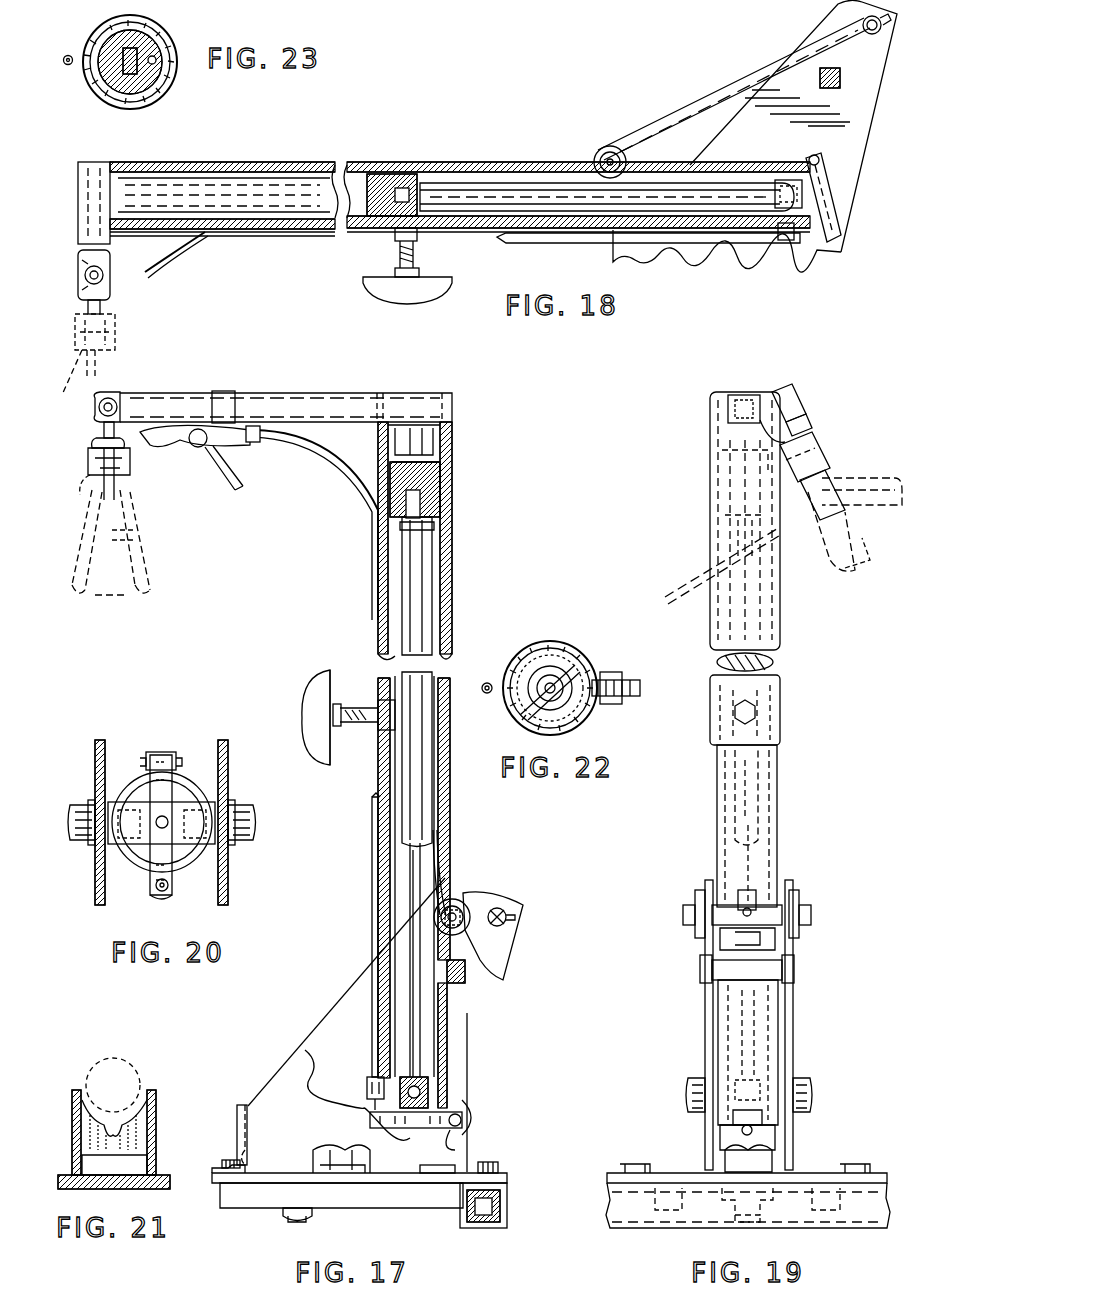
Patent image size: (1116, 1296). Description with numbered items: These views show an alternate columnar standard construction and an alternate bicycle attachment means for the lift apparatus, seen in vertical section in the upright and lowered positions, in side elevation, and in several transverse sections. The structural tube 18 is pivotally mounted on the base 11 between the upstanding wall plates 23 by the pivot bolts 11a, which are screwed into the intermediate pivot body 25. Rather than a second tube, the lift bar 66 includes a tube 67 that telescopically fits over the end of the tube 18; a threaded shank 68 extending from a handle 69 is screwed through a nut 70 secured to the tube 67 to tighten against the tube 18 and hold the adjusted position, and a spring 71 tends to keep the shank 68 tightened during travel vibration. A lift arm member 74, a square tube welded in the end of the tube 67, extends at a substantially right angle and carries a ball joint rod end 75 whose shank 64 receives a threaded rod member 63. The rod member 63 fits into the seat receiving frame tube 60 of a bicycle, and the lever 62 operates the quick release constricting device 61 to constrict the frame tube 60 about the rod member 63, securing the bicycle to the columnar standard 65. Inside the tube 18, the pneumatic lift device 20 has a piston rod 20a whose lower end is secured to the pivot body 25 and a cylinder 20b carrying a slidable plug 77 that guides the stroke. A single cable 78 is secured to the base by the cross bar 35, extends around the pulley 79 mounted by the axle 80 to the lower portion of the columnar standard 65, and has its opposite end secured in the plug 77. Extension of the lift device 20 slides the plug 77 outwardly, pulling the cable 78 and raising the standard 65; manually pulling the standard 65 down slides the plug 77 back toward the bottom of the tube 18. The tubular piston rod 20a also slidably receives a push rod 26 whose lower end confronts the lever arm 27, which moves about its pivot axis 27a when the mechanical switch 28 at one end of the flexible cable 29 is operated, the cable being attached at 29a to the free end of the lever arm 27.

In FIG. 19, the base 11 is at (650, 1160).
In FIG. 20, the pivot bolts 11a is at (82, 805).
In FIG. 19, the pivot bolts 11a is at (695, 1080).
In FIG. 23, the structural tube 18 is at (165, 88).
In FIG. 18, the structural tube 18 is at (532, 162).
In FIG. 17, the structural tube 18 is at (450, 782).
In FIG. 22, the structural tube 18 is at (553, 641).
In FIG. 20, the structural tube 18 is at (135, 862).
In FIG. 19, the structural tube 18 is at (778, 830).
In FIG. 17, the pneumatic lift device 20 is at (405, 893).
In FIG. 17, the piston rod 20a is at (415, 935).
In FIG. 22, the piston rod 20a is at (512, 713).
In FIG. 19, the piston rod 20a is at (755, 1030).
In FIG. 18, the cylinder 20b is at (490, 183).
In FIG. 17, the cylinder 20b is at (410, 586).
In FIG. 22, the cylinder 20b is at (578, 720).
In FIG. 18, the upstanding wall plates 23 is at (860, 95).
In FIG. 17, the upstanding wall plates 23 is at (470, 1015).
In FIG. 20, the upstanding wall plates 23 is at (223, 740).
In FIG. 21, the upstanding wall plates 23 is at (72, 1100).
In FIG. 19, the upstanding wall plates 23 is at (705, 1000).
In FIG. 17, the intermediate pivot body 25 is at (460, 1080).
In FIG. 17, the push rod 26 is at (467, 1172).
In FIG. 18, the lever arm 27 is at (832, 198).
In FIG. 17, the lever arm 27 is at (462, 1135).
In FIG. 20, the lever arm 27 is at (150, 790).
In FIG. 18, the pivot axis 27a is at (820, 158).
In FIG. 17, the pivot axis 27a is at (462, 1108).
In FIG. 20, the pivot axis 27a is at (178, 758).
In FIG. 17, the mechanical switch 28 is at (190, 447).
In FIG. 23, the flexible cable 29 is at (67, 55).
In FIG. 18, the flexible cable 29 is at (812, 245).
In FIG. 17, the flexible cable 29 is at (300, 445).
In FIG. 22, the flexible cable 29 is at (487, 683).
In FIG. 20, the flexible cable 29 is at (152, 888).
In FIG. 18, the cable attachment 29a is at (838, 232).
In FIG. 17, the cable attachment 29a is at (365, 1125).
In FIG. 20, the cable attachment 29a is at (163, 892).
In FIG. 18, the cross bar 35 is at (860, 22).
In FIG. 17, the cross bar 35 is at (490, 910).
In FIG. 19, the cross bar 35 is at (770, 950).
In FIG. 18, the seat receiving frame tube 60 is at (118, 330).
In FIG. 17, the seat receiving frame tube 60 is at (138, 540).
In FIG. 19, the seat receiving frame tube 60 is at (845, 548).
In FIG. 18, the quick release constricting device 61 is at (120, 338).
In FIG. 17, the quick release constricting device 61 is at (135, 476).
In FIG. 19, the quick release constricting device 61 is at (825, 460).
In FIG. 18, the lever 62 is at (66, 385).
In FIG. 17, the lever 62 is at (82, 498).
In FIG. 18, the rod member 63 is at (80, 312).
In FIG. 17, the rod member 63 is at (96, 446).
In FIG. 19, the rod member 63 is at (806, 432).
In FIG. 18, the attaching shank 64 is at (100, 310).
In FIG. 17, the attaching shank 64 is at (102, 436).
In FIG. 19, the attaching shank 64 is at (805, 422).
In FIG. 18, the columnar standard 65 is at (356, 152).
In FIG. 17, the columnar standard 65 is at (470, 600).
In FIG. 19, the columnar standard 65 is at (800, 710).
In FIG. 18, the lift bar 66 is at (62, 185).
In FIG. 17, the lift bar 66 is at (332, 382).
In FIG. 23, the tube 67 is at (100, 90).
In FIG. 18, the tube 67 is at (190, 160).
In FIG. 17, the tube 67 is at (452, 443).
In FIG. 19, the tube 67 is at (710, 492).
In FIG. 18, the threaded shank 68 is at (398, 248).
In FIG. 17, the threaded shank 68 is at (340, 712).
In FIG. 18, the handle 69 is at (432, 296).
In FIG. 17, the handle 69 is at (310, 683).
In FIG. 18, the nut 70 is at (420, 236).
In FIG. 17, the nut 70 is at (370, 700).
In FIG. 18, the spring 71 is at (430, 262).
In FIG. 17, the spring 71 is at (348, 728).
In FIG. 18, the lift arm member 74 is at (78, 200).
In FIG. 17, the lift arm member 74 is at (272, 392).
In FIG. 19, the lift arm member 74 is at (740, 394).
In FIG. 19, the ball joint rod end 75 is at (795, 392).
In FIG. 23, the slidable plug 77 is at (150, 36).
In FIG. 17, the slidable plug 77 is at (400, 505).
In FIG. 18, the cable 78 is at (692, 135).
In FIG. 17, the cable 78 is at (440, 813).
In FIG. 22, the cable 78 is at (566, 670).
In FIG. 19, the cable 78 is at (770, 665).
In FIG. 18, the pulley 79 is at (609, 148).
In FIG. 17, the pulley 79 is at (470, 975).
In FIG. 22, the pulley 79 is at (630, 698).
In FIG. 19, the pulley 79 is at (738, 900).
In FIG. 18, the axle 80 is at (598, 152).
In FIG. 17, the axle 80 is at (508, 930).
In FIG. 22, the axle 80 is at (608, 672).